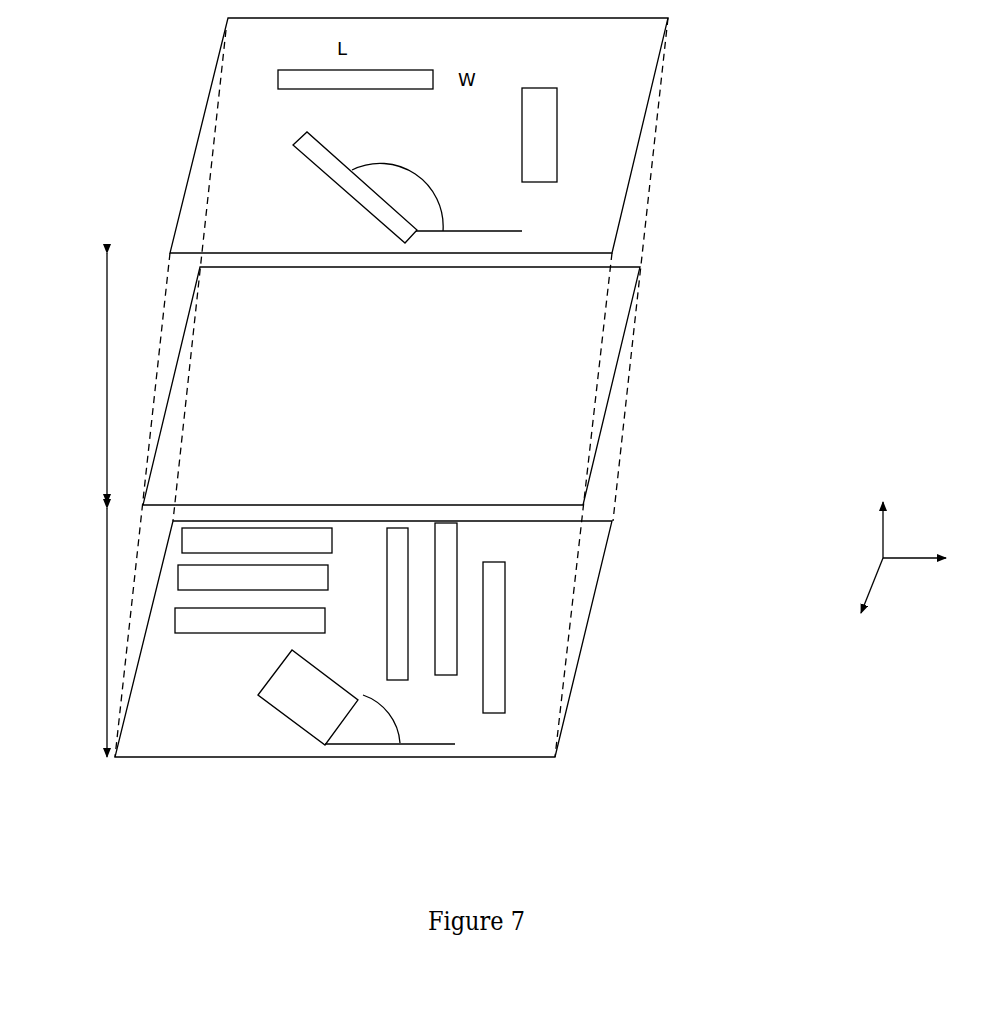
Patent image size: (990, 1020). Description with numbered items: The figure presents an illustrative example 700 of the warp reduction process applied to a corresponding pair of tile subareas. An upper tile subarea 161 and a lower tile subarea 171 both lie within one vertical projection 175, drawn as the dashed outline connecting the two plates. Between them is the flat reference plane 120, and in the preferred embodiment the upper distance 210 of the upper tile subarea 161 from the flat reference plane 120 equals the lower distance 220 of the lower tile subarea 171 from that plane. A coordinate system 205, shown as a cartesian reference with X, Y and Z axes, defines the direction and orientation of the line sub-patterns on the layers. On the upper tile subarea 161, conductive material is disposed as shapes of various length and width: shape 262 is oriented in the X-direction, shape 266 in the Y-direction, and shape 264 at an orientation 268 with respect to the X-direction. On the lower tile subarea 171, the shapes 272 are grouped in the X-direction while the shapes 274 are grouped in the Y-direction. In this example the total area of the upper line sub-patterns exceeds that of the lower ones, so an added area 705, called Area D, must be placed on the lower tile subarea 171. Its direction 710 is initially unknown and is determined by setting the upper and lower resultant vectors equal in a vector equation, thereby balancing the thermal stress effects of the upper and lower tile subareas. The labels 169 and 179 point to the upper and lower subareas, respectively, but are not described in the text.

The illustrative example 700 is at (900, 104).
The upper tile subarea 161 is at (608, 65).
The inner surface of first plate 169 is at (282, 143).
The vertical projection 175 is at (660, 187).
The shape 262 is at (357, 97).
The shape 264 is at (338, 198).
The shape 266 is at (563, 127).
The orientation 268 is at (407, 165).
The flat reference plane 120 is at (613, 320).
The upper distance 210 is at (74, 378).
The lower distance 220 is at (74, 632).
The lower tile subarea 171 is at (587, 540).
The inner surface of second plate 179 is at (363, 578).
The shapes 272 is at (237, 640).
The shapes 274 is at (470, 568).
The added area 705 is at (295, 735).
The direction 710 is at (373, 733).
The coordinate system 205 is at (922, 556).